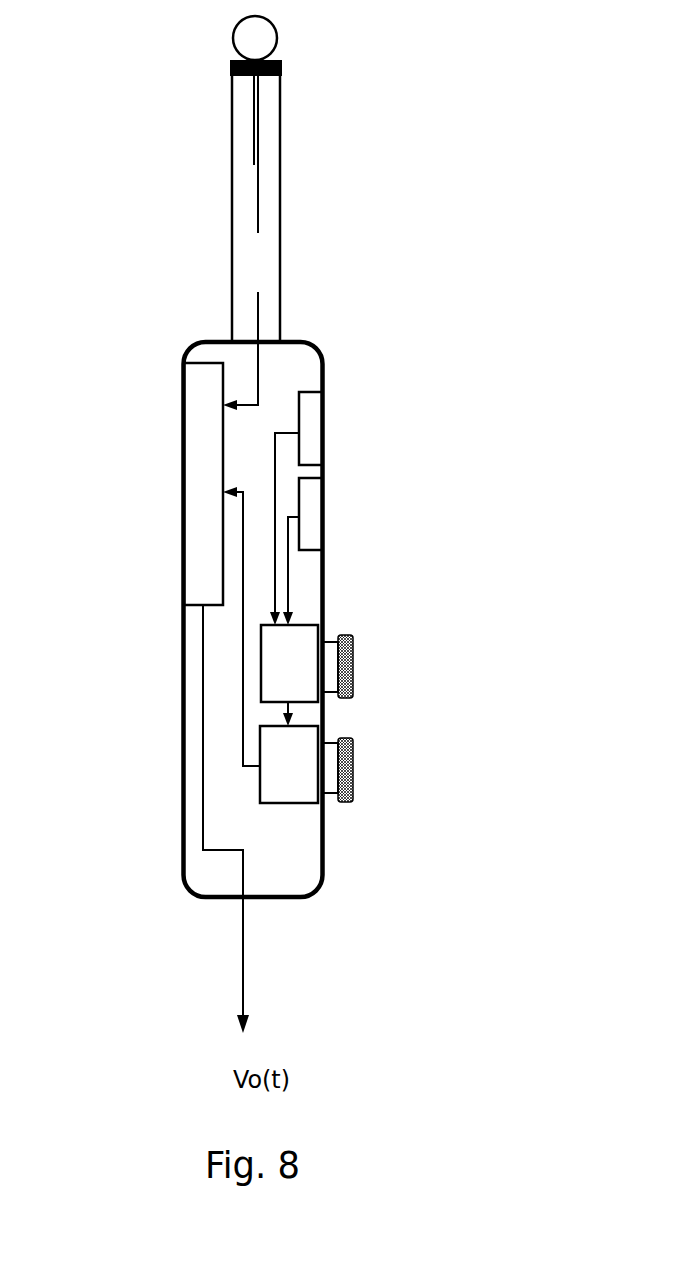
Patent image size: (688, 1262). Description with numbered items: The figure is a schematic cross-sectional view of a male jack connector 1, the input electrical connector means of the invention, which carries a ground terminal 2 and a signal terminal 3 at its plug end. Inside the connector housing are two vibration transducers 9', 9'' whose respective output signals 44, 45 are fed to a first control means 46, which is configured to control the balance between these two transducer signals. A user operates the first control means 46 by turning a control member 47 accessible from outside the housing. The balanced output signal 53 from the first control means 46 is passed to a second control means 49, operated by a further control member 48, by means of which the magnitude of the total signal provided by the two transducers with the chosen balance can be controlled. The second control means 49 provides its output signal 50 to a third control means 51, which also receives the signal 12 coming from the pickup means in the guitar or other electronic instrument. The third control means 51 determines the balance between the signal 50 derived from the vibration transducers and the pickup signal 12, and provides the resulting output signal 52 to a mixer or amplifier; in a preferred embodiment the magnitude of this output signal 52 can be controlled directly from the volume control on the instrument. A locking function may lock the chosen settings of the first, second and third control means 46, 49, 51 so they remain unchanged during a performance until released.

The male jack connector 1 is at (317, 343).
The ground terminal 2 is at (280, 157).
The signal terminal 3 is at (260, 42).
The signal from the pickup means 12 is at (258, 290).
The third control means 51 is at (198, 530).
The vibration transducer 9' is at (349, 448).
The vibration transducer 9'' is at (352, 516).
The output signal 44 is at (290, 558).
The output signal 45 is at (277, 590).
The first control means 46 is at (288, 652).
The control member 47 is at (353, 655).
The balanced output signal 53 is at (330, 711).
The control member 48 is at (353, 758).
The second control means 49 is at (280, 750).
The output signal 50 is at (243, 697).
The output signal 52 is at (244, 972).